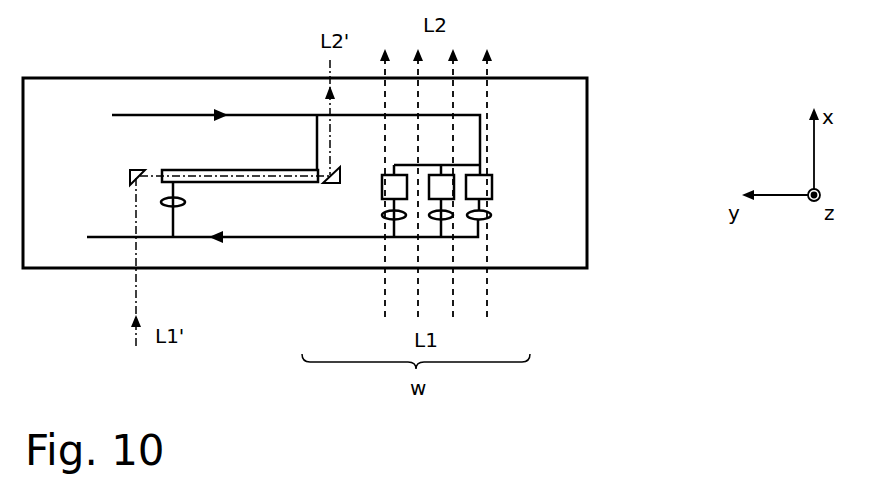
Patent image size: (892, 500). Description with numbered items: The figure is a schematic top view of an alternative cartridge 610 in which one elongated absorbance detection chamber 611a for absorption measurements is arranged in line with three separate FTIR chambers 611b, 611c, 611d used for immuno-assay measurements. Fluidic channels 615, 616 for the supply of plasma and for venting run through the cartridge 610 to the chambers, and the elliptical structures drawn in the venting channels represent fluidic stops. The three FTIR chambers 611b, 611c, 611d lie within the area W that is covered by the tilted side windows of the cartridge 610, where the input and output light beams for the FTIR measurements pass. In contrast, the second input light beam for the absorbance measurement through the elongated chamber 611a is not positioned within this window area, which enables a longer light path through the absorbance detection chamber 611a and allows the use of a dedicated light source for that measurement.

The cartridge 610 is at (587, 112).
The elongated absorbance detection chamber 611a is at (275, 170).
The FTIR chamber 611b is at (392, 188).
The FTIR chamber 611c is at (442, 190).
The FTIR chamber 611d is at (483, 183).
The upper light path / waveguide 615 is at (138, 115).
The lower light path / waveguide 616 is at (108, 240).